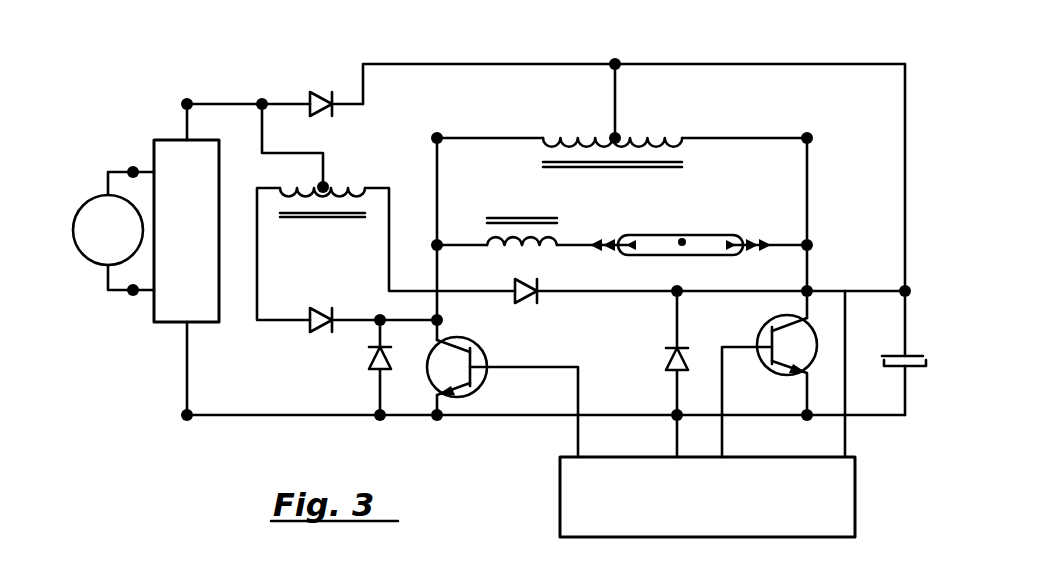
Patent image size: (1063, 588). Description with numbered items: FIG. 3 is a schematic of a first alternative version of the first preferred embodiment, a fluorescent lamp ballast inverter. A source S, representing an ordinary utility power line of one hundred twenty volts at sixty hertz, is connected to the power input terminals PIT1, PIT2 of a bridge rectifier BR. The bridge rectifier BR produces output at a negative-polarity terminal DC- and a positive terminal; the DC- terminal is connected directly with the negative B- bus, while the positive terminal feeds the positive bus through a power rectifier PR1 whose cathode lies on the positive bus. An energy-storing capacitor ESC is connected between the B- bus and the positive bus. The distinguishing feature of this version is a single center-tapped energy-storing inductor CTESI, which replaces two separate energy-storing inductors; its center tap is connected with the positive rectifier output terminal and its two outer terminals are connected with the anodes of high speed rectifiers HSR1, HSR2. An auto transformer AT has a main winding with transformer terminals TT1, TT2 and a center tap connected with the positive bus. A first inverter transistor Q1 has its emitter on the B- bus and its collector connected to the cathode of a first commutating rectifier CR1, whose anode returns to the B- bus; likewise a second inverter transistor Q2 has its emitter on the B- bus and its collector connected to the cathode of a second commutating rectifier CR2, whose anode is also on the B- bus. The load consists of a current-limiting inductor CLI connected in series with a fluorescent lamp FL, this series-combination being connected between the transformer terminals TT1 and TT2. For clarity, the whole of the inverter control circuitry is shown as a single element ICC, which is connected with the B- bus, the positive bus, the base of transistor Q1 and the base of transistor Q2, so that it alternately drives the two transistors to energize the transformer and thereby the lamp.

The B− bus B- is at (508, 418).
The DC− terminal DC- is at (184, 417).
The power input terminal PIT1 is at (133, 165).
The power input terminal PIT2 is at (131, 297).
The source S is at (108, 230).
The bridge rectifier BR is at (166, 326).
The power rectifier PR1 is at (322, 113).
The center-tapped energy-storing inductor CTESI is at (307, 220).
The high speed rectifier HSR1 is at (318, 332).
The high speed rectifier HSR2 is at (530, 302).
The first commutating rectifier CR1 is at (370, 358).
The second commutating rectifier CR2 is at (665, 356).
The first inverter transistor Q1 is at (482, 390).
The second inverter transistor Q2 is at (767, 376).
The transformer terminal TT1 is at (437, 130).
The transformer terminal TT2 is at (806, 132).
The auto transformer AT is at (607, 170).
The current-limiting inductor CLI is at (518, 215).
The fluorescent lamp FL is at (692, 234).
The energy-storing capacitor ESC is at (893, 354).
The inverter control circuitry ICC is at (559, 497).